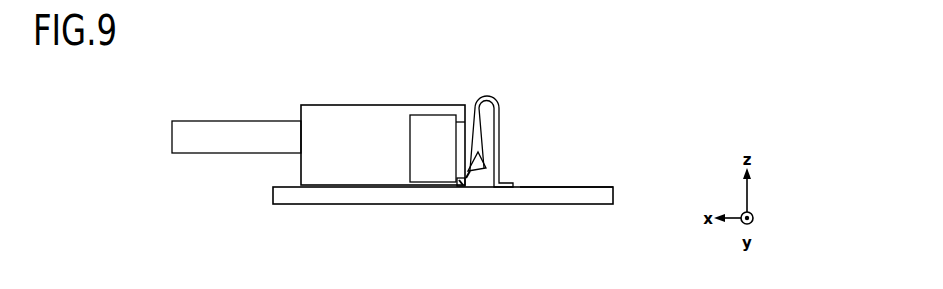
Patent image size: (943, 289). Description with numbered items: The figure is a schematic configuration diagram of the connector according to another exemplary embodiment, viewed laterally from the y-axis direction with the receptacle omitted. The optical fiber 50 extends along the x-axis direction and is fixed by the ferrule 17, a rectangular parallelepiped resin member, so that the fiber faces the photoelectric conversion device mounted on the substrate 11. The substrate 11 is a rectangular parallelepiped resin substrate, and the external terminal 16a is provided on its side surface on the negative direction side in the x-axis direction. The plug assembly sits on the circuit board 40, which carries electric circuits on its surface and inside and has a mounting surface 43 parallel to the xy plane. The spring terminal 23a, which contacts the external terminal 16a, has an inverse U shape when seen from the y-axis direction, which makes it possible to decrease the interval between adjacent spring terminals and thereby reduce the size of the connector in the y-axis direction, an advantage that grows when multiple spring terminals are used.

The optical fiber 50 is at (188, 143).
The ferrule 17 is at (313, 175).
The substrate 11 is at (426, 178).
The external terminal 16a is at (462, 177).
The spring terminal 23a is at (499, 105).
The circuit board 40 is at (558, 197).
The mounting surface 43 is at (589, 190).